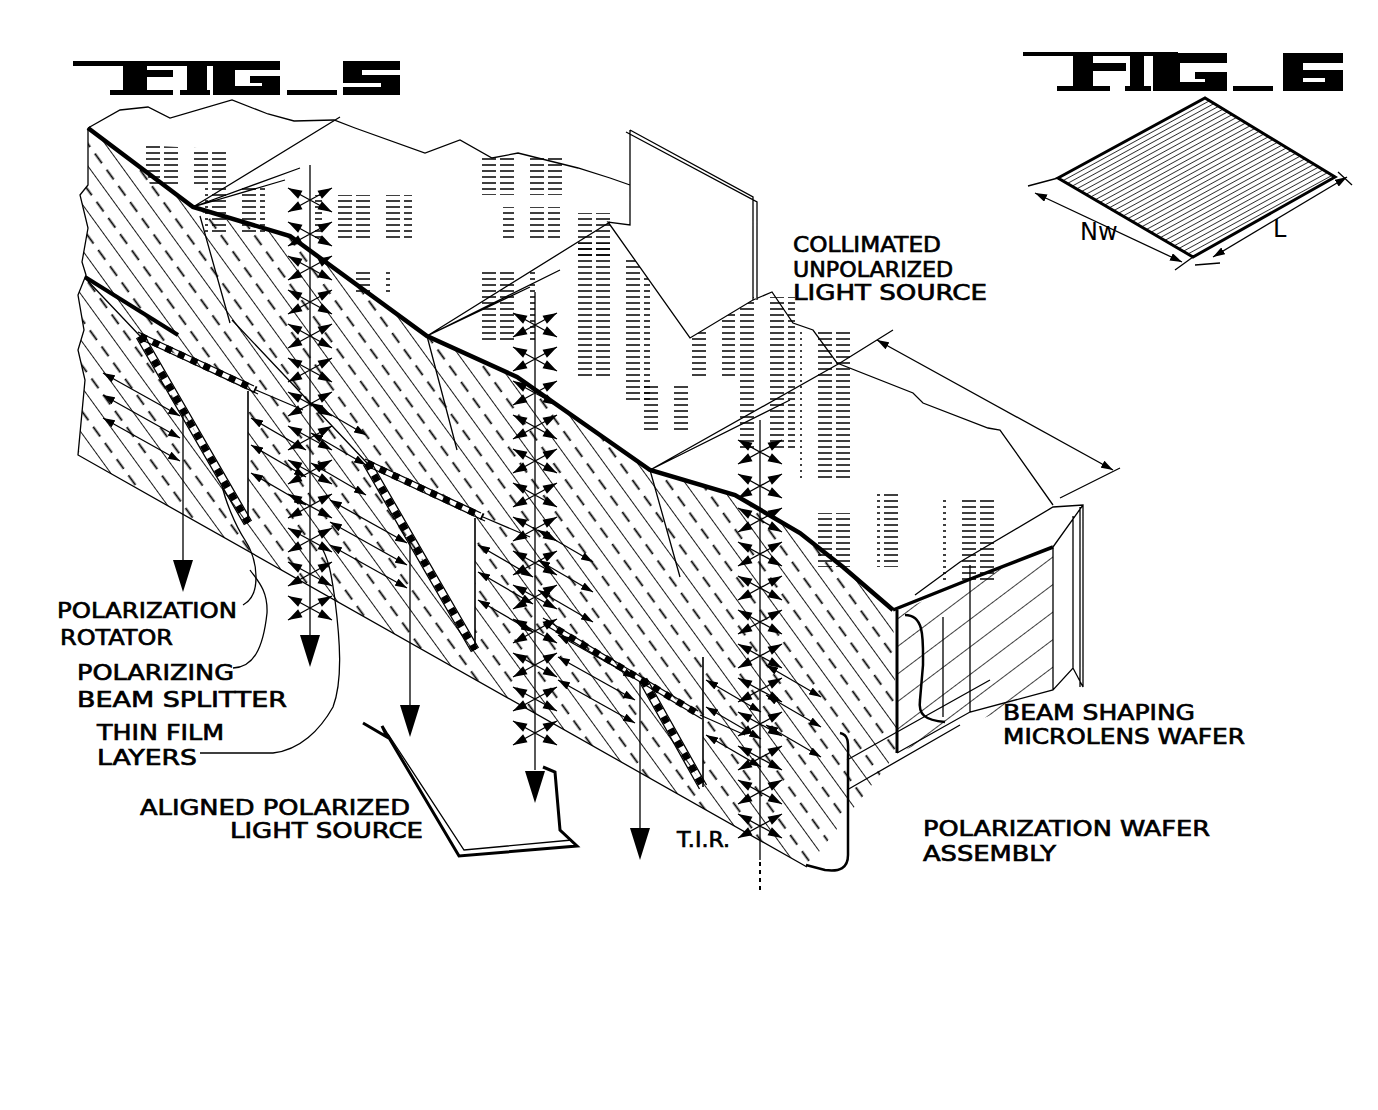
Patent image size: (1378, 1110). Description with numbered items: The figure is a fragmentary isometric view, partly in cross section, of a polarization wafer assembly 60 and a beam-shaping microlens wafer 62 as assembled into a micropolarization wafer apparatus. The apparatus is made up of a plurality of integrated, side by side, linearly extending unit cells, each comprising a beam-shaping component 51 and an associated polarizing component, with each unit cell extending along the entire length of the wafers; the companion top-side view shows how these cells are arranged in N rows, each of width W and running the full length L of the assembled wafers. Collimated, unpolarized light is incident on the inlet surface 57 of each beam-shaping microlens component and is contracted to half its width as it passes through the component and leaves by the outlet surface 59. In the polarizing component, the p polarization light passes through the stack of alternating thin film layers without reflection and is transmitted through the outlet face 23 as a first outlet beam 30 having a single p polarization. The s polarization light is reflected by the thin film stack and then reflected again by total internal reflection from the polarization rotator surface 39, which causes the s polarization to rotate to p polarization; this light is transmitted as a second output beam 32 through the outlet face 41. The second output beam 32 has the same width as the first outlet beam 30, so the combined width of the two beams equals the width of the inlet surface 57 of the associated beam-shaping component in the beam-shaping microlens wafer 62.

The outlet face 23 is at (121, 462).
The first outlet beam 30 is at (298, 652).
The second output beam 32 is at (162, 580).
The polarization rotator surface 39 is at (236, 449).
The outlet face 41 is at (180, 458).
The beam-shaping component 51 is at (342, 117).
The inlet surface 57 is at (110, 150).
The outlet surface 59 is at (272, 385).
The polarization wafer assembly 60 is at (855, 813).
The beam-shaping microlens wafer 62 is at (925, 706).